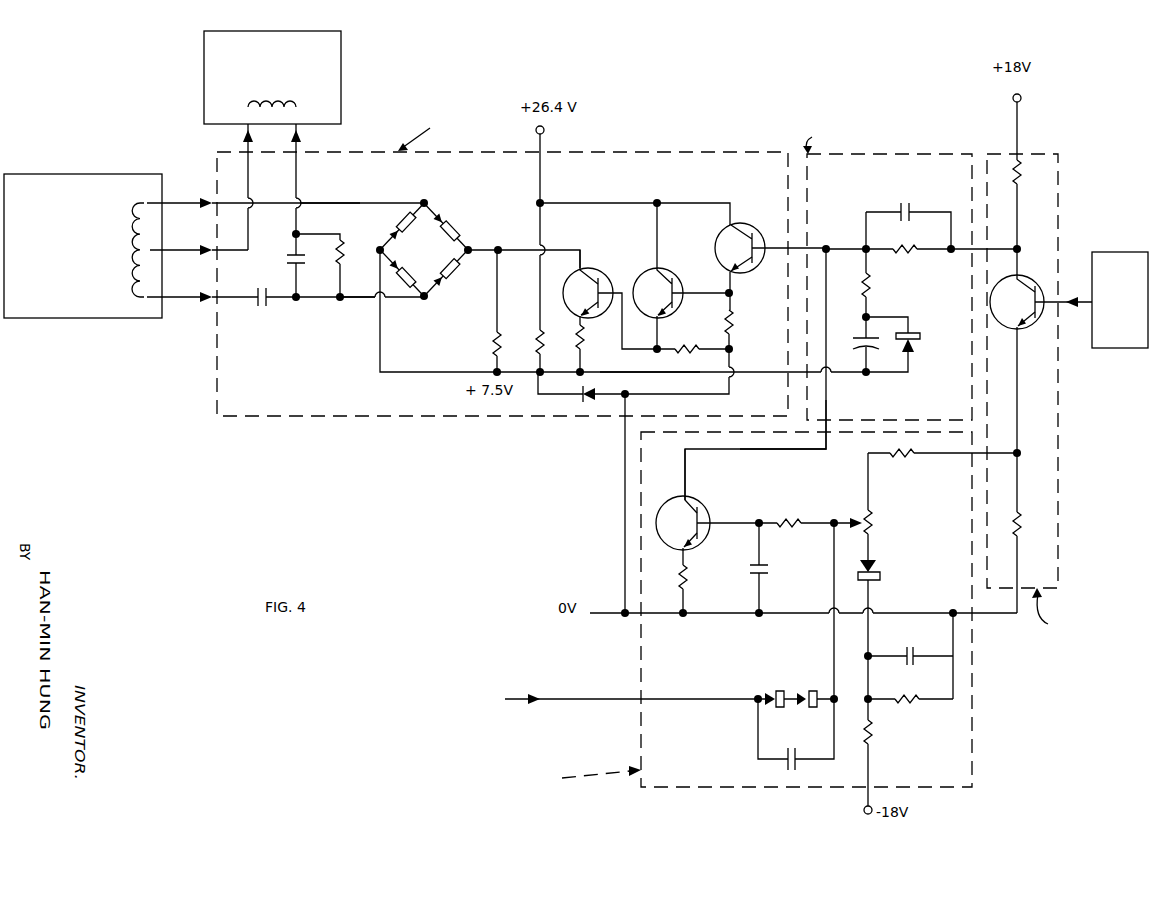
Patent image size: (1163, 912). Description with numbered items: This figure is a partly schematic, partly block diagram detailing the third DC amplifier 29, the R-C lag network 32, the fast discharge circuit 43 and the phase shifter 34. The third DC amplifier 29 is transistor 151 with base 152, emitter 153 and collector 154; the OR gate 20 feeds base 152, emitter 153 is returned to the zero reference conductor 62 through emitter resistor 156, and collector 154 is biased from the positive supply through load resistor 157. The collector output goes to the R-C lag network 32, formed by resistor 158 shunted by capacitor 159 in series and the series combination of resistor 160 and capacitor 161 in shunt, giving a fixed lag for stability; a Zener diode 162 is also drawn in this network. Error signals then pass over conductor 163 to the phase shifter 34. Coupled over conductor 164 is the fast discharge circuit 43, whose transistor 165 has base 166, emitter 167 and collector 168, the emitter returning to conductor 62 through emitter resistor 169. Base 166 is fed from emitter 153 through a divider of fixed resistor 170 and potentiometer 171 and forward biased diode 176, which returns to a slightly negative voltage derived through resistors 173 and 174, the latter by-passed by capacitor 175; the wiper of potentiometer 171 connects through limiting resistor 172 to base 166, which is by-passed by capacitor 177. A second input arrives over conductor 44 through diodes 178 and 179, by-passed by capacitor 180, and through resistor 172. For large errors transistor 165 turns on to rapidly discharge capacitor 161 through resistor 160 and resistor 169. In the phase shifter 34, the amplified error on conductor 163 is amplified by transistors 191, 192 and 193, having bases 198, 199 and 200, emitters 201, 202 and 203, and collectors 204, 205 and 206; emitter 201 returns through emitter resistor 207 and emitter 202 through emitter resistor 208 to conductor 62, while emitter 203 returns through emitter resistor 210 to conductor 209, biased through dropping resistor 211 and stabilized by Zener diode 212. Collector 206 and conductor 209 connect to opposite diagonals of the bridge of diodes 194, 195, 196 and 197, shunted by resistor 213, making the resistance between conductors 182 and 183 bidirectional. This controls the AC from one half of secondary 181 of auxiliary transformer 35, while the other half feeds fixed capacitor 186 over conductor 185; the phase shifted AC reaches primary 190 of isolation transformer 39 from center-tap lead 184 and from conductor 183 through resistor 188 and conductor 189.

The auxiliary transformer 35 is at (76, 172).
The isolation transformer 39 is at (343, 80).
The primary 190 is at (296, 107).
The conductor 189 is at (297, 167).
The conductor 182 is at (330, 203).
The center-tap lead 184 is at (244, 252).
The secondary 181 is at (140, 297).
The resistor 188 is at (343, 244).
The conductor 185 is at (250, 303).
The fixed capacitor 186 is at (272, 304).
The conductor 183 is at (360, 301).
The diode 197 is at (398, 216).
The diode 196 is at (454, 222).
The diode 194 is at (410, 304).
The diode 195 is at (441, 284).
The resistor 213 is at (492, 344).
The dropping resistor 211 is at (535, 347).
The transistor 193 is at (565, 302).
The collector 206 is at (588, 266).
The base 200 is at (604, 274).
The transistor 192 is at (614, 286).
The emitter 203 is at (586, 316).
The emitter resistor 210 is at (586, 352).
The collector 205 is at (660, 270).
The base 199 is at (676, 292).
The emitter 202 is at (668, 313).
The emitter resistor 208 is at (684, 349).
The transistor 191 is at (717, 230).
The collector 204 is at (738, 222).
The base 198 is at (752, 226).
The emitter 201 is at (733, 272).
The emitter resistor 207 is at (732, 322).
The conductor 209 is at (662, 376).
The Zener diode 212 is at (583, 395).
The emitter resistor 169 is at (628, 568).
The phase shifter 34 is at (620, 151).
The R-C lag network 32 is at (956, 152).
The DC amplifier No. 3 29 is at (1040, 151).
The fast discharge circuit 43 is at (974, 648).
The conductor 163 is at (798, 248).
The conductor 164 is at (786, 450).
The capacitor 159 is at (907, 207).
The resistor 158 is at (904, 247).
The resistor 160 is at (872, 287).
The capacitor 161 is at (852, 338).
The Zener diode 162 is at (920, 335).
The load resistor 157 is at (1019, 184).
The transistor 151 is at (1032, 282).
The emitter 153 is at (992, 309).
The collector 154 is at (1000, 298).
The base 152 is at (1034, 319).
The OR gate 20 is at (1124, 252).
The emitter resistor 156 is at (1020, 532).
The collector 168 is at (694, 498).
The transistor 165 is at (706, 507).
The base 166 is at (700, 530).
The emitter 167 is at (681, 577).
The limiting resistor 172 is at (775, 528).
The capacitor 177 is at (773, 568).
The fixed resistor 170 is at (897, 456).
The potentiometer 171 is at (874, 525).
The diode 176 is at (877, 571).
The zero reference conductor 62 is at (617, 561).
The capacitor 175 is at (913, 648).
The resistor 174 is at (904, 705).
The resistor 173 is at (875, 742).
The conductor 44 is at (617, 696).
The diode 178 is at (766, 706).
The diode 179 is at (804, 708).
The capacitor 180 is at (798, 765).